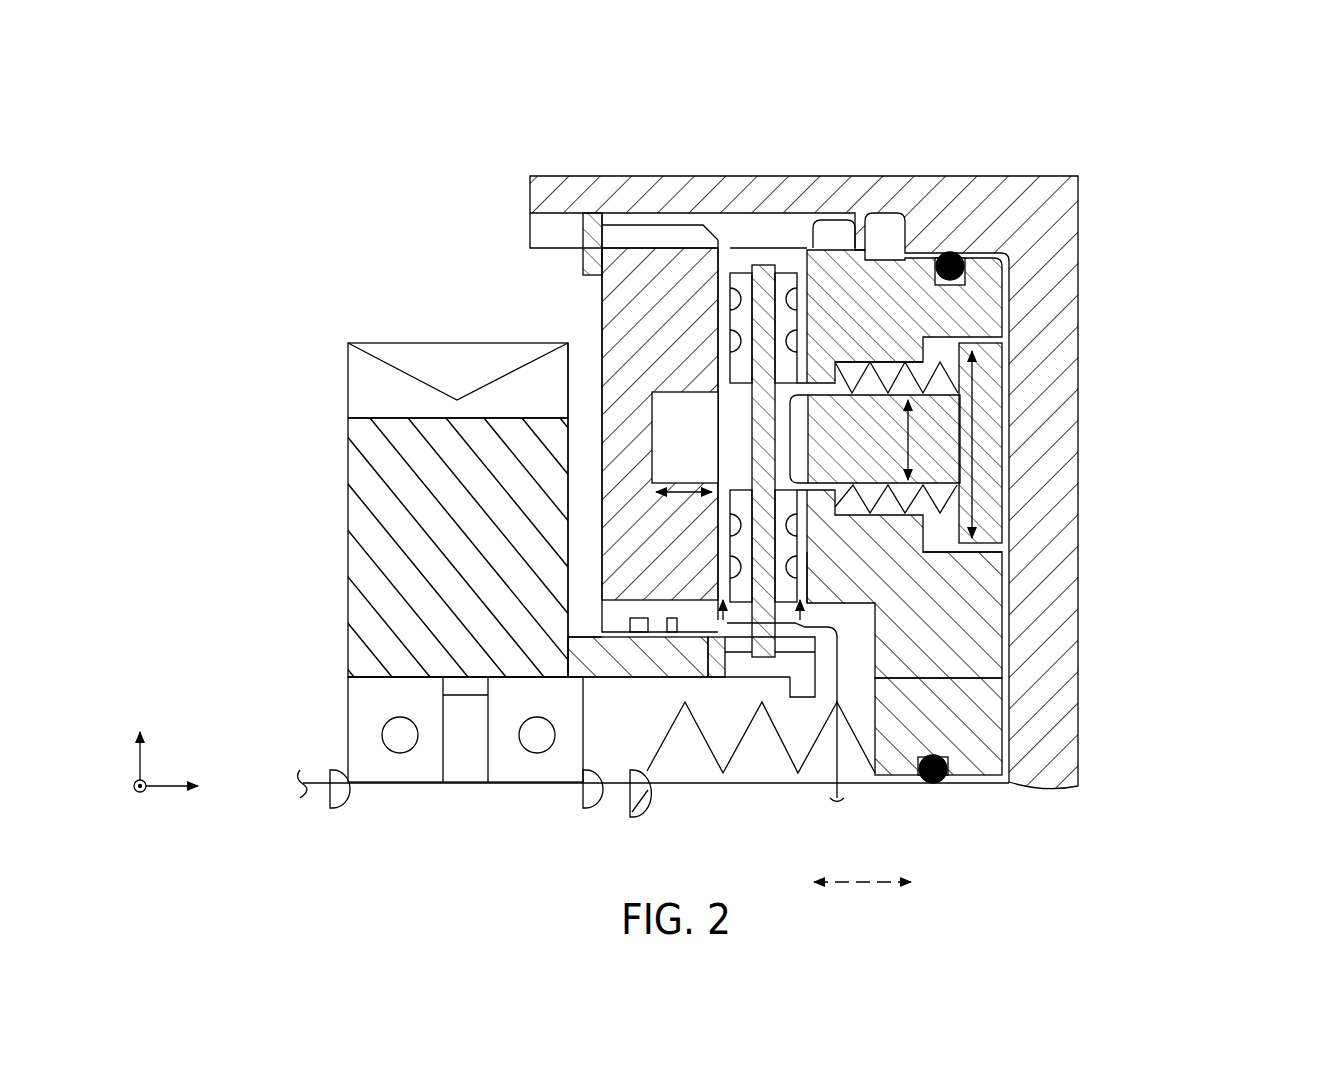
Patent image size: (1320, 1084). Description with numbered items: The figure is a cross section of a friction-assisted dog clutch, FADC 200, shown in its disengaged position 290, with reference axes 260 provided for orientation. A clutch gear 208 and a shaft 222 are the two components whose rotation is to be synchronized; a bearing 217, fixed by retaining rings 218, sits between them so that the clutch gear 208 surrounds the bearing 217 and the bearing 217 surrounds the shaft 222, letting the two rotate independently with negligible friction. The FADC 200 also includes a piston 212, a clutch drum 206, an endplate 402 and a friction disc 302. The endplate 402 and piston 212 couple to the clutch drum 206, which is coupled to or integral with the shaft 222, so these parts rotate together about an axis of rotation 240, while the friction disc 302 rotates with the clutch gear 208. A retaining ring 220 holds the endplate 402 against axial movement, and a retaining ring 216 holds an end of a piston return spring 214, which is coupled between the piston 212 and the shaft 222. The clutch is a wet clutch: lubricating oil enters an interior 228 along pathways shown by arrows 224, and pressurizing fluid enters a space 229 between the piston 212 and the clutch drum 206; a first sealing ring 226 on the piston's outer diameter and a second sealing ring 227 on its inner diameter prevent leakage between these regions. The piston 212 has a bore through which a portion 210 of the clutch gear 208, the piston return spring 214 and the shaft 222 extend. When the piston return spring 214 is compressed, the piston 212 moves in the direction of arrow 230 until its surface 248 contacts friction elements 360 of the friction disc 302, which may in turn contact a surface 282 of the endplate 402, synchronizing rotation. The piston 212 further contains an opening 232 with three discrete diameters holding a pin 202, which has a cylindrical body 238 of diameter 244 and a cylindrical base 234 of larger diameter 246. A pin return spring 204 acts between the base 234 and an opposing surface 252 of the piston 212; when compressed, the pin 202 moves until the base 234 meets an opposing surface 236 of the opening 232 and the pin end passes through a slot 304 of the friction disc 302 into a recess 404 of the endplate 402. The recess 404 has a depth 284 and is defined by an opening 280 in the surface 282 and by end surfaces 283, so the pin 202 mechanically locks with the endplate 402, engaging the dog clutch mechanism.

The FADC 200 is at (372, 216).
The pin 202 is at (980, 440).
The pin return spring 204 is at (958, 497).
The clutch drum 206 is at (1062, 178).
The clutch gear 208 is at (348, 660).
The portion of the clutch gear 210 is at (683, 684).
The piston 212 is at (893, 290).
The piston return spring 214 is at (790, 762).
The retaining ring 216 is at (640, 818).
The bearing 217 is at (490, 782).
The retaining rings 218 is at (333, 808).
The retaining ring 220 is at (590, 217).
The shaft 222 is at (986, 836).
The arrows 224 is at (878, 680).
The first sealing ring 226 is at (950, 262).
The second sealing ring 227 is at (937, 786).
The interior 228 is at (827, 628).
The space 229 is at (1016, 558).
The arrow 230 is at (1195, 445).
The opening 232 is at (952, 550).
The base 234 is at (985, 405).
The opposing surface 236 is at (927, 350).
The cylindrical body 238 is at (818, 462).
The axis of rotation 240 is at (850, 872).
The diameter 244 is at (908, 433).
The larger diameter 246 is at (972, 452).
The surface of the piston 248 is at (808, 560).
The opposing surface of the piston 252 is at (835, 372).
The reference axes 260 is at (188, 752).
The openings 280 is at (704, 407).
The surface of the endplate 282 is at (718, 550).
The end surfaces 283 is at (650, 445).
The depth 284 is at (652, 498).
The disengaged position 290 is at (253, 326).
The friction disc 302 is at (766, 263).
The slot 304 is at (760, 465).
The friction elements 360 is at (795, 272).
The endplate 402 is at (602, 330).
The recess 404 is at (678, 392).